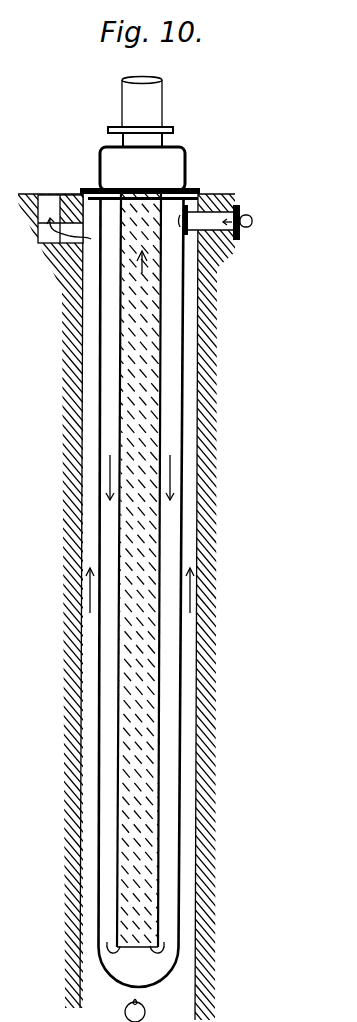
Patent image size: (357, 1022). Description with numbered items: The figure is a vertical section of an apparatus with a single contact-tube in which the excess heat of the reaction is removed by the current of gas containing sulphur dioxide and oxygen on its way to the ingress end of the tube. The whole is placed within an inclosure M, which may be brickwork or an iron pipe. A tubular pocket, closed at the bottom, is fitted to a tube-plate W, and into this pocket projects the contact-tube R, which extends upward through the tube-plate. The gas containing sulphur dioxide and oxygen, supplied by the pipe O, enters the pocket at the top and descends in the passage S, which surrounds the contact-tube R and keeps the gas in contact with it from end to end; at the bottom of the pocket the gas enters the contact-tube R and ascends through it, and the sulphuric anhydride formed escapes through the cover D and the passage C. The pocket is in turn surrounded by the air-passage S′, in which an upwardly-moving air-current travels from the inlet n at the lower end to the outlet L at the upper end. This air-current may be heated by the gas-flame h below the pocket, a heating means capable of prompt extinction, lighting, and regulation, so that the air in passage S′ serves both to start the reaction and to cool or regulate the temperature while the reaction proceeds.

The passage C is at (140, 112).
The cover D is at (140, 173).
The tube-plate W is at (207, 201).
The pipe O is at (242, 236).
The outlet L is at (178, 595).
The passage S is at (140, 573).
The air-passage S′ is at (190, 417).
The contact-tube R is at (178, 570).
The inclosure M is at (178, 606).
The inlet n is at (95, 1006).
The heating means h is at (143, 1006).